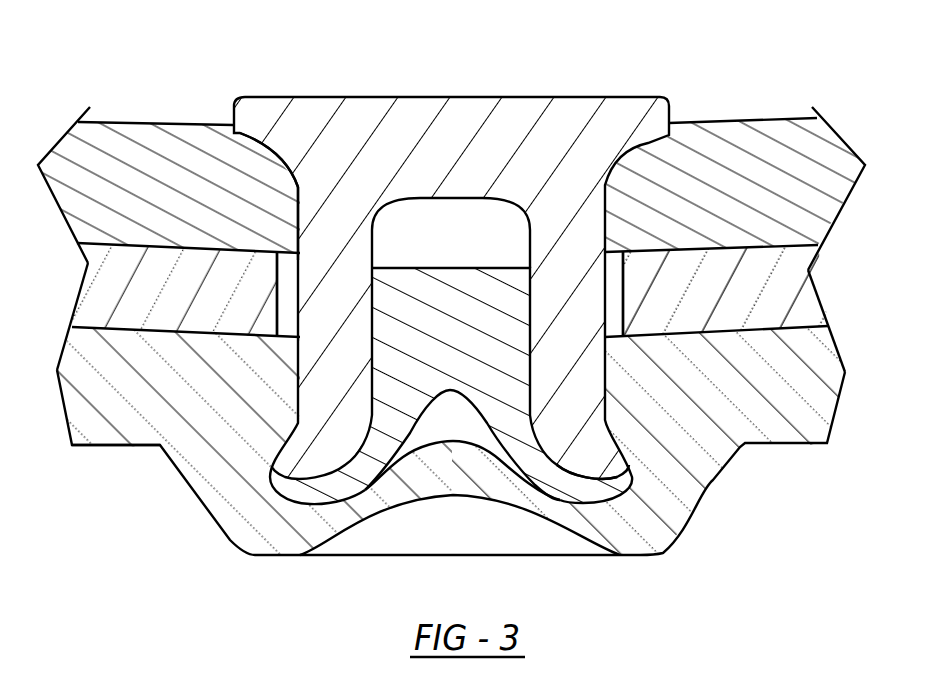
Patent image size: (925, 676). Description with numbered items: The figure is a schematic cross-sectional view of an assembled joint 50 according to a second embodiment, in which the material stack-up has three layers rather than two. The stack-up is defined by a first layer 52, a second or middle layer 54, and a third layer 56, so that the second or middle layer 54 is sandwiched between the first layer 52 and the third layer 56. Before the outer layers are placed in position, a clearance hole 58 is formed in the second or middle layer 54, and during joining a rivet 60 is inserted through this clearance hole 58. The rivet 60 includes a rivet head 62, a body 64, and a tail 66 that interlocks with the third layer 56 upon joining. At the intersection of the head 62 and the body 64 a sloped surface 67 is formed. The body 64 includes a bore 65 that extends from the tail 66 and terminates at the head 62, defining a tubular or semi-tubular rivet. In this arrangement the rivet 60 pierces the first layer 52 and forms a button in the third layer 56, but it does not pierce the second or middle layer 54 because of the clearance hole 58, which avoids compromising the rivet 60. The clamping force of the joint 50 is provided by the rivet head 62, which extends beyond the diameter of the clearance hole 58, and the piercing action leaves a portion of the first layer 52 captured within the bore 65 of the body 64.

The joint 50 is at (178, 560).
The first layer 52 is at (100, 163).
The second or middle layer 54 is at (100, 280).
The third layer 56 is at (93, 403).
The clearance hole 58 is at (287, 292).
The rivet 60 is at (341, 207).
The rivet head 62 is at (543, 123).
The body 64 is at (319, 398).
The bore 65 is at (410, 223).
The tail 66 is at (587, 453).
The sloped surface 67 is at (282, 153).